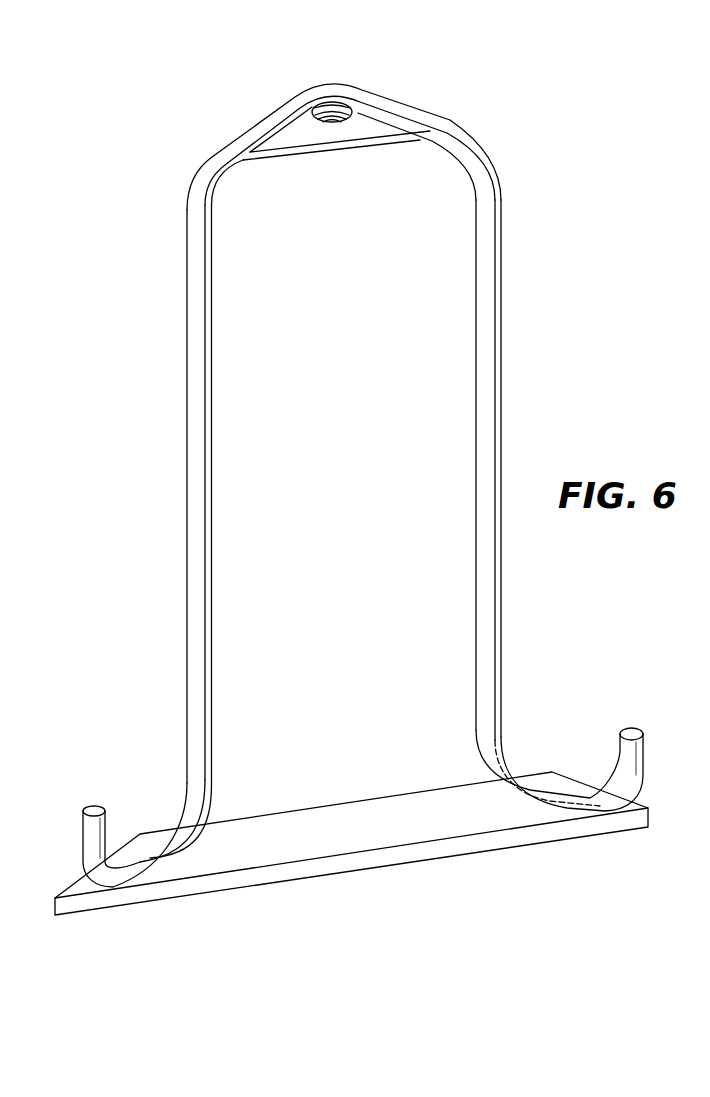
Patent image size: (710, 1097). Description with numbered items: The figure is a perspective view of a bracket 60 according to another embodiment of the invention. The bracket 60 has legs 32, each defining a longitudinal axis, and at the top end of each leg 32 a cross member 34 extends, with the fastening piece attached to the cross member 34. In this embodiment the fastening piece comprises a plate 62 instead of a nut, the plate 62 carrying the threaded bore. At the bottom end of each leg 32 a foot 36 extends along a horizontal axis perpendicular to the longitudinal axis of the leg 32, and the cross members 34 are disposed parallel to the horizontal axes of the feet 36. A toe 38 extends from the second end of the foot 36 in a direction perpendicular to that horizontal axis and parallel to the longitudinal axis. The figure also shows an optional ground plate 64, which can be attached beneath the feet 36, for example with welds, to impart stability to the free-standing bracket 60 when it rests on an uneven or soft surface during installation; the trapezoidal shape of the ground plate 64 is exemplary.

The leg 32 is at (504, 350).
The cross member 34 is at (415, 112).
The foot 36 is at (165, 840).
The toe 38 is at (618, 747).
The bracket 60 is at (543, 169).
The plate 62 is at (299, 127).
The ground plate 64 is at (353, 812).